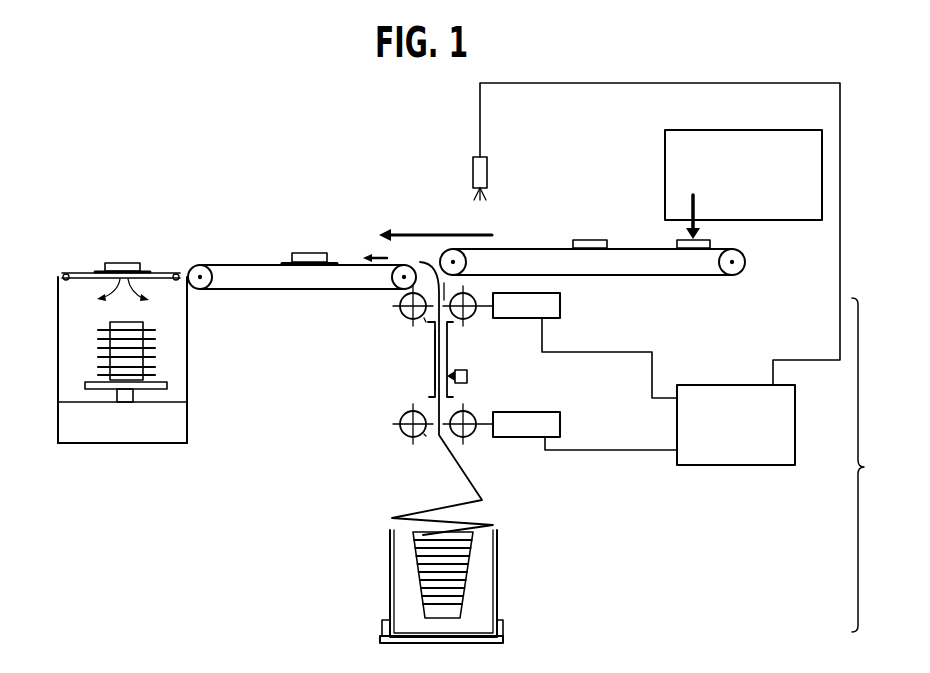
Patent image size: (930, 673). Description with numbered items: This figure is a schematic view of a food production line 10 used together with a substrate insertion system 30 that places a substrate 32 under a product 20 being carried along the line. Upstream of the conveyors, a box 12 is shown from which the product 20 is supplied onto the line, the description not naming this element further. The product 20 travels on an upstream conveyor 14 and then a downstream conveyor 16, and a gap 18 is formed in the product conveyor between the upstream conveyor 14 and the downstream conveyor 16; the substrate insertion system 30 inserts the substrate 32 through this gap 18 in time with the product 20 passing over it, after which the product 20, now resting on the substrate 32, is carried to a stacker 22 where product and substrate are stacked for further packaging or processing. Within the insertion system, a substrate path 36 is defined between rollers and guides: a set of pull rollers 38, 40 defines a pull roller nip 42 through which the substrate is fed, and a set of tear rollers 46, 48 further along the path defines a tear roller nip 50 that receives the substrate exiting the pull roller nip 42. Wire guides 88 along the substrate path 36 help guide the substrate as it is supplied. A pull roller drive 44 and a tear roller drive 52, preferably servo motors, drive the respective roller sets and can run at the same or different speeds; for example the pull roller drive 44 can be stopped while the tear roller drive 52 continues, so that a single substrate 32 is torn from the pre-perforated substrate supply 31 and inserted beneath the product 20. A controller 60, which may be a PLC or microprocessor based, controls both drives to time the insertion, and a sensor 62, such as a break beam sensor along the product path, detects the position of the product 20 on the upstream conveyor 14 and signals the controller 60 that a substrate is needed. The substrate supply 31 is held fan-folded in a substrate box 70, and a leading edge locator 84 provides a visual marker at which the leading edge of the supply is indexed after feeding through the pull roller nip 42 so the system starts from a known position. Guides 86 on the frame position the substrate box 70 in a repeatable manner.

The food production line 10 is at (363, 170).
The product supply 12 is at (766, 188).
The upstream conveyor 14 is at (657, 281).
The downstream conveyor 16 is at (278, 294).
The gap 18 is at (440, 248).
The product 20 is at (588, 240).
The stacker 22 is at (52, 329).
The substrate insertion system 30 is at (866, 467).
The substrate supply 31 is at (456, 466).
The substrate 32 is at (290, 263).
The substrate path 36 is at (428, 404).
The pull roller 38 is at (472, 410).
The pull roller 40 is at (398, 420).
The pull roller nip 42 is at (425, 437).
The pull roller drive 44 is at (561, 426).
The tear roller 46 is at (467, 319).
The tear roller 48 is at (398, 308).
The tear roller nip 50 is at (422, 323).
The tear roller drive 52 is at (561, 305).
The controller 60 is at (746, 435).
The sensor 62 is at (488, 168).
The substrate box 70 is at (499, 557).
The leading edge locator 84 is at (468, 376).
The guides 86 is at (381, 624).
The wire guides 88 is at (432, 357).